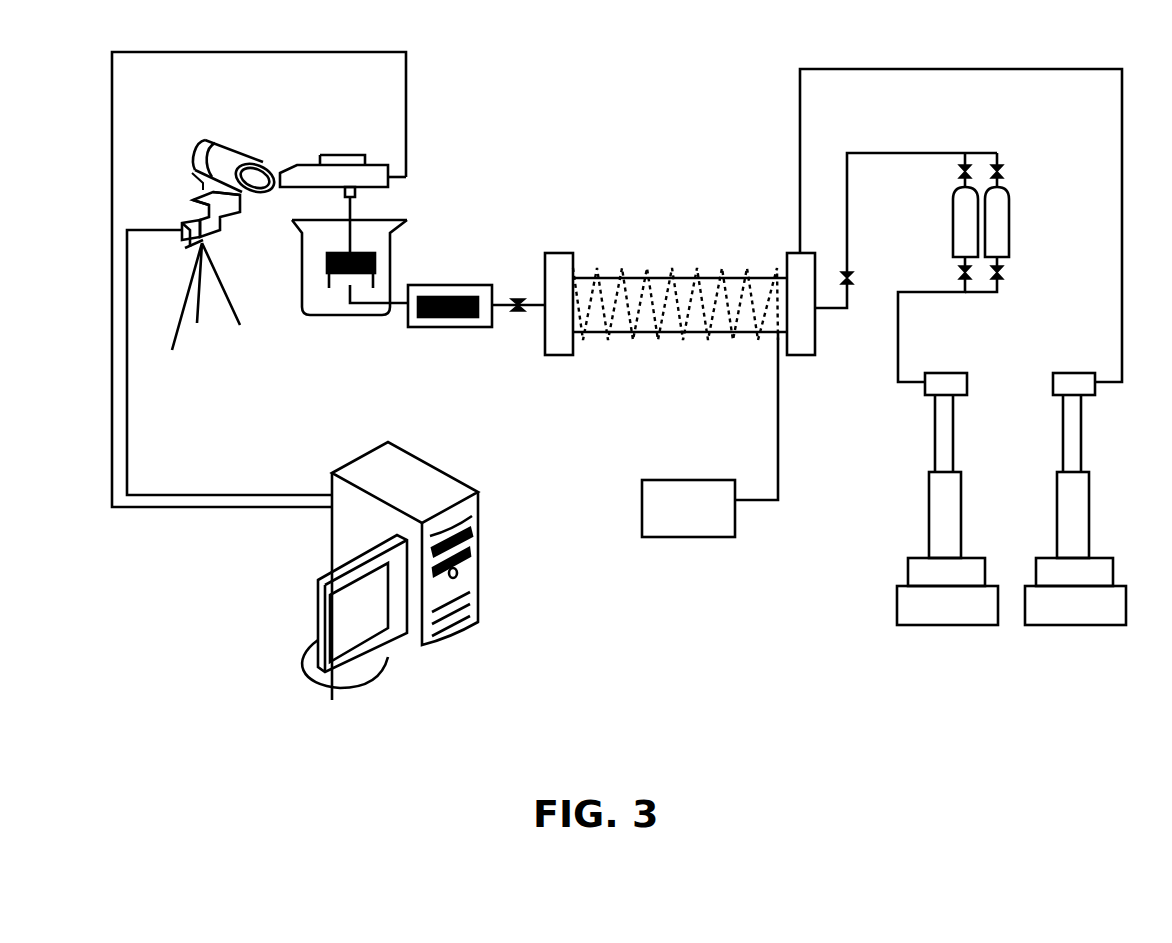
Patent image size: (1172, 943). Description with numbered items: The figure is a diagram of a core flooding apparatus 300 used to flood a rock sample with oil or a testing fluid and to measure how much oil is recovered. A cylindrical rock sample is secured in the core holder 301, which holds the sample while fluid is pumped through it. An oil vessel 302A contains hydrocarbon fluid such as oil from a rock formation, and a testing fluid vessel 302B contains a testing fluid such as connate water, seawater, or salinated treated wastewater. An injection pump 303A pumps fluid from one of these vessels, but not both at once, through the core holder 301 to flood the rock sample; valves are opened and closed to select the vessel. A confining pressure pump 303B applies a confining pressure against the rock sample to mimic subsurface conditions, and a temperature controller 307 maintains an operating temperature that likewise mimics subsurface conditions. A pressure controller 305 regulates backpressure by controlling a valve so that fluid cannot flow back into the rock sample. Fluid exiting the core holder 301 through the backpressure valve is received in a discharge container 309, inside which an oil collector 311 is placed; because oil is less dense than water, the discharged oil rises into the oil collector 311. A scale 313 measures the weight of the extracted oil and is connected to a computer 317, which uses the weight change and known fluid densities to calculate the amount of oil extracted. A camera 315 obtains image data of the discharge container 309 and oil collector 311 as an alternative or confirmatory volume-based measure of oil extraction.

The core flooding apparatus 300 is at (488, 118).
The core holder 301 is at (610, 277).
The oil vessel 302A is at (947, 233).
The testing fluid vessel 302B is at (1010, 233).
The injection pump 303A is at (967, 627).
The confining pressure pump 303B is at (1105, 627).
The pressure controller 305 is at (468, 285).
The temperature controller 307 is at (685, 537).
The discharge container 309 is at (335, 317).
The oil collector 311 is at (327, 265).
The scale 313 is at (318, 155).
The camera 315 is at (208, 138).
The computer 317 is at (387, 637).